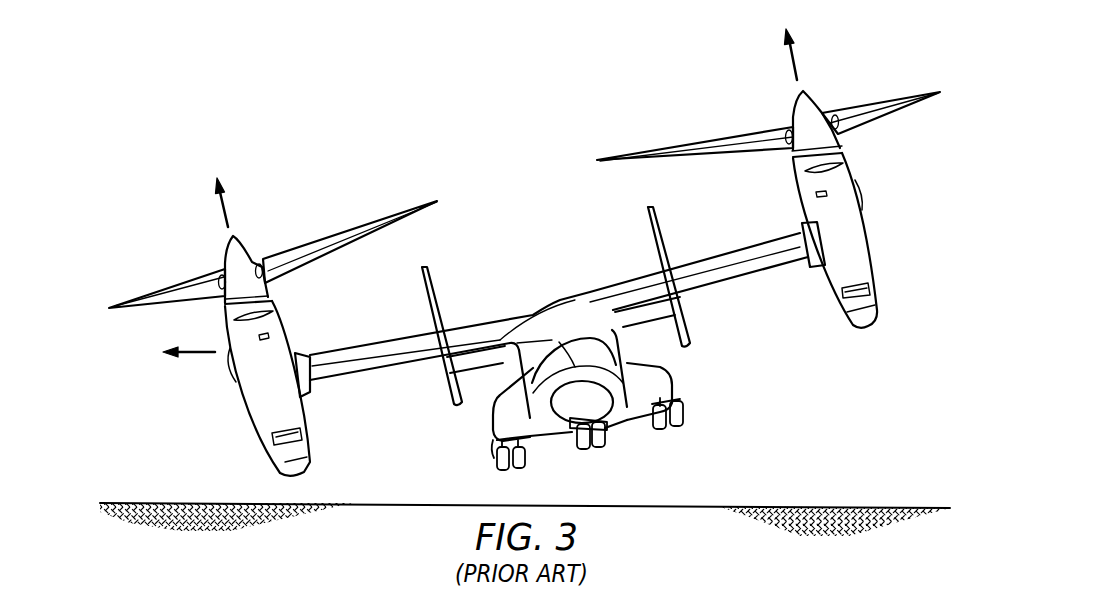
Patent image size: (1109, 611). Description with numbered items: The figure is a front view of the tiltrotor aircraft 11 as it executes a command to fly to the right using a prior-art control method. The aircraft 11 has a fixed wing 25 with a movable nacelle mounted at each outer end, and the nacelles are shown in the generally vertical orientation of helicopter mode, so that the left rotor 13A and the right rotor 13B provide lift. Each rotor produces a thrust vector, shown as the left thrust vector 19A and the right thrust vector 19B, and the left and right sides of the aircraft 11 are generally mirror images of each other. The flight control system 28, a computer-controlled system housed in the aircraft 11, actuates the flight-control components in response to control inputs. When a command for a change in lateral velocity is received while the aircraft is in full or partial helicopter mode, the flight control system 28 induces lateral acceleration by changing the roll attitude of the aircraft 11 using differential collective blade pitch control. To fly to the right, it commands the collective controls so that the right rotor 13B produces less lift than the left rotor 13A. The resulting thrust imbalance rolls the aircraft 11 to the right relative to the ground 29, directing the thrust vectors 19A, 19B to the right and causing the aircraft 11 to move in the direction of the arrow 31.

The tiltrotor aircraft 11 is at (374, 129).
The left rotor 13A is at (776, 108).
The right rotor 13B is at (209, 255).
The left thrust vector 19A is at (793, 63).
The right thrust vector 19B is at (229, 212).
The fixed wing 25 is at (743, 248).
The flight control system 28 is at (559, 342).
The ground 29 is at (820, 503).
The arrow 31 is at (197, 354).